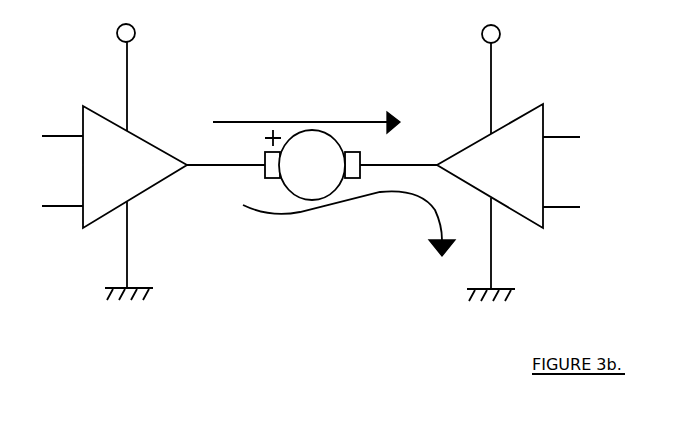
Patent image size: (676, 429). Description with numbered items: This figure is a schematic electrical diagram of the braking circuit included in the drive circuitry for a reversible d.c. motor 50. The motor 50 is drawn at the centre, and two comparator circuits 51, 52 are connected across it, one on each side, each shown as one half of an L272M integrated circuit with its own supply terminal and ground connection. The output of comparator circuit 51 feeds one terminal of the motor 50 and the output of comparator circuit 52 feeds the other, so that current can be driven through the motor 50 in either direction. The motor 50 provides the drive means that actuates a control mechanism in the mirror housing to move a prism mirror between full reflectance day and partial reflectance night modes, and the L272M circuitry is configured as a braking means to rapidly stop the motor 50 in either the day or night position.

The reversible d.c. motor 50 is at (307, 150).
The comparator circuit 51 is at (92, 125).
The comparator circuit 52 is at (527, 135).